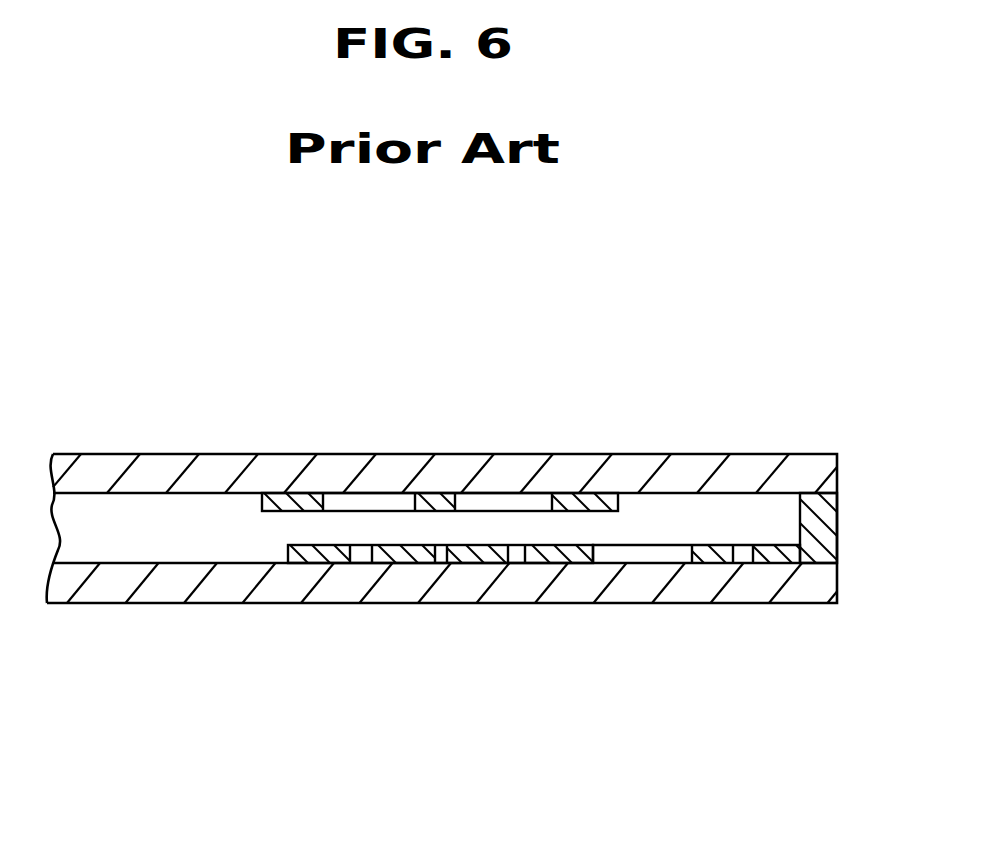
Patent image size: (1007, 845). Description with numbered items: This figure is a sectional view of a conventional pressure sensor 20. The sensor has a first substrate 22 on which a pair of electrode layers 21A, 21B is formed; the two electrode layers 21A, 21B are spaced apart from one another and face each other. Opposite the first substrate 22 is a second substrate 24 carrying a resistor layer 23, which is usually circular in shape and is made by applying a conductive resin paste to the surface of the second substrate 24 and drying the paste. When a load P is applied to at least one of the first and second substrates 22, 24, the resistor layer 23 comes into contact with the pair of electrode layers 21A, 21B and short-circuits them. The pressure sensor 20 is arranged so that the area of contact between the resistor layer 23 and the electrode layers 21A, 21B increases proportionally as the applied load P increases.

The pressure sensor 20 is at (660, 438).
The electrode layer 21A is at (462, 555).
The electrode layer 21B is at (608, 560).
The first substrate 22 is at (557, 588).
The resistor layer 23 is at (433, 503).
The second substrate 24 is at (252, 453).
The load P is at (520, 442).